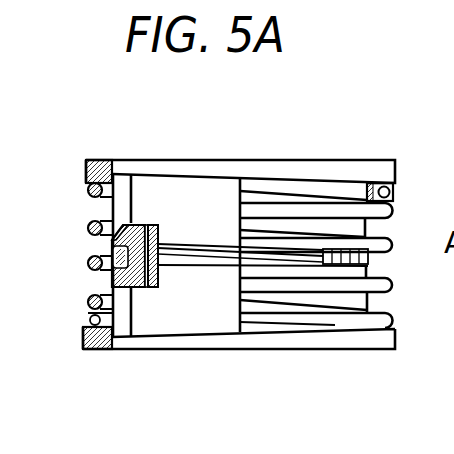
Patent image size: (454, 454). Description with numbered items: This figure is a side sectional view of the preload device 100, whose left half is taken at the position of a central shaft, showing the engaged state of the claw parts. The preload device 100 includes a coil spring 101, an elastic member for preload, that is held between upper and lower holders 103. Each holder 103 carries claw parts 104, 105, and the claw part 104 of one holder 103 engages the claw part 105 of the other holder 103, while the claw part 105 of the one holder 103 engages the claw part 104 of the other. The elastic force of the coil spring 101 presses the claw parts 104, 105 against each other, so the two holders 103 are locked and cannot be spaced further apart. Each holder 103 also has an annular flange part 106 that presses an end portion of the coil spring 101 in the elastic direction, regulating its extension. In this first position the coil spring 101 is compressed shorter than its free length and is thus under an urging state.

The preload device 100 is at (313, 144).
The coil spring 101 is at (88, 303).
The holder 103 is at (196, 196).
The claw part 104 is at (110, 253).
The claw part 105 is at (110, 220).
The annular flange part 106 is at (96, 161).